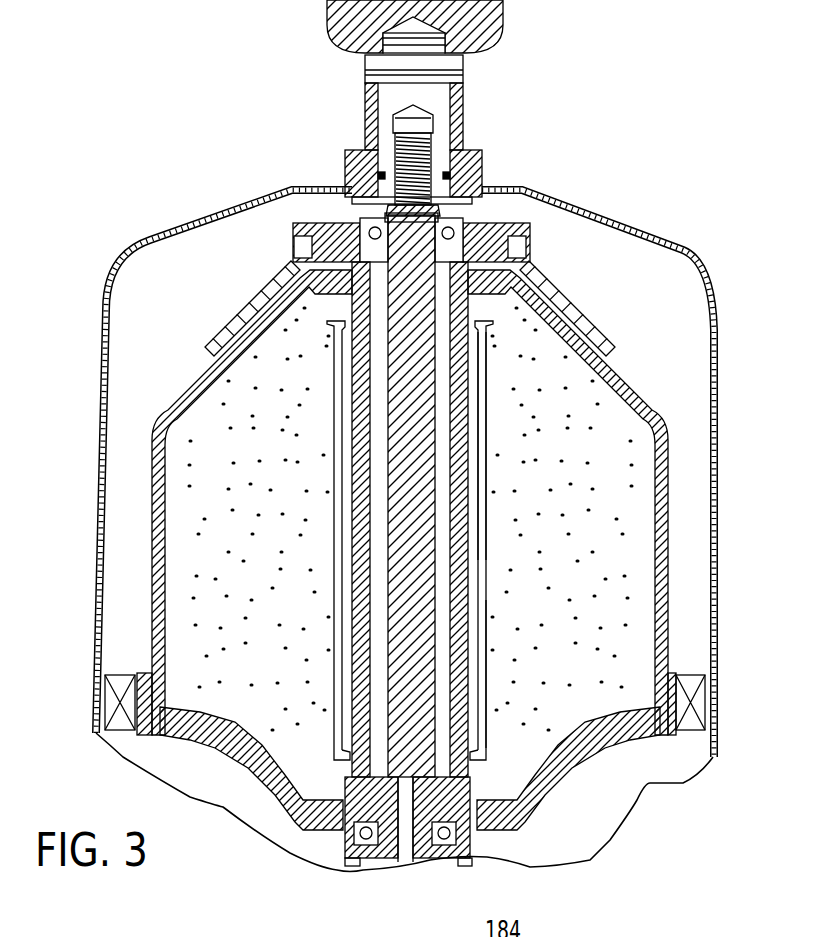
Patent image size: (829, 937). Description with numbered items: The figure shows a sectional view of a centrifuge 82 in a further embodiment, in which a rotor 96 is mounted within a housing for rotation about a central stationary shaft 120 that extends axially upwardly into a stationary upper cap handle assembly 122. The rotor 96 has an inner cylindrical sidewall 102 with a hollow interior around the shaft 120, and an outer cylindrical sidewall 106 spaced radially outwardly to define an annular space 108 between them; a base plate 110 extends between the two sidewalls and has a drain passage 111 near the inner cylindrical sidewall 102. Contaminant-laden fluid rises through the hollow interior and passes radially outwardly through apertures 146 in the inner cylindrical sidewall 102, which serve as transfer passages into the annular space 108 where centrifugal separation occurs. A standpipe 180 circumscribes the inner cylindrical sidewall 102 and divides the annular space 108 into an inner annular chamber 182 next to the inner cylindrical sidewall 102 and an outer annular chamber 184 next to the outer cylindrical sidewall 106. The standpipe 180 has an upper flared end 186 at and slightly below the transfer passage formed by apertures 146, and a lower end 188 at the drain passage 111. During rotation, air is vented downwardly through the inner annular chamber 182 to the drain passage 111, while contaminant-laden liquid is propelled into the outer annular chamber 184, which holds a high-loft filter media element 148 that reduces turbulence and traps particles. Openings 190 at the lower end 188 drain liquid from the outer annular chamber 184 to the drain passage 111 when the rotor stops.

The centrifuge 82 is at (110, 262).
The rotor 96 is at (665, 426).
The inner cylindrical sidewall 102 is at (468, 423).
The outer cylindrical sidewall 106 is at (668, 512).
The annular space 108 is at (209, 412).
The base plate 110 is at (569, 778).
The drain passage 111 is at (488, 826).
The central stationary shaft 120 is at (393, 540).
The upper cap handle assembly 122 is at (497, 32).
The apertures 146 is at (540, 294).
The filter media element 148 is at (170, 565).
The standpipe 180 is at (496, 396).
The inner annular chamber 182 is at (472, 575).
The outer annular chamber 184 is at (625, 490).
The upper flared end 186 is at (492, 336).
The lower end 188 is at (480, 752).
The openings 190 is at (490, 684).